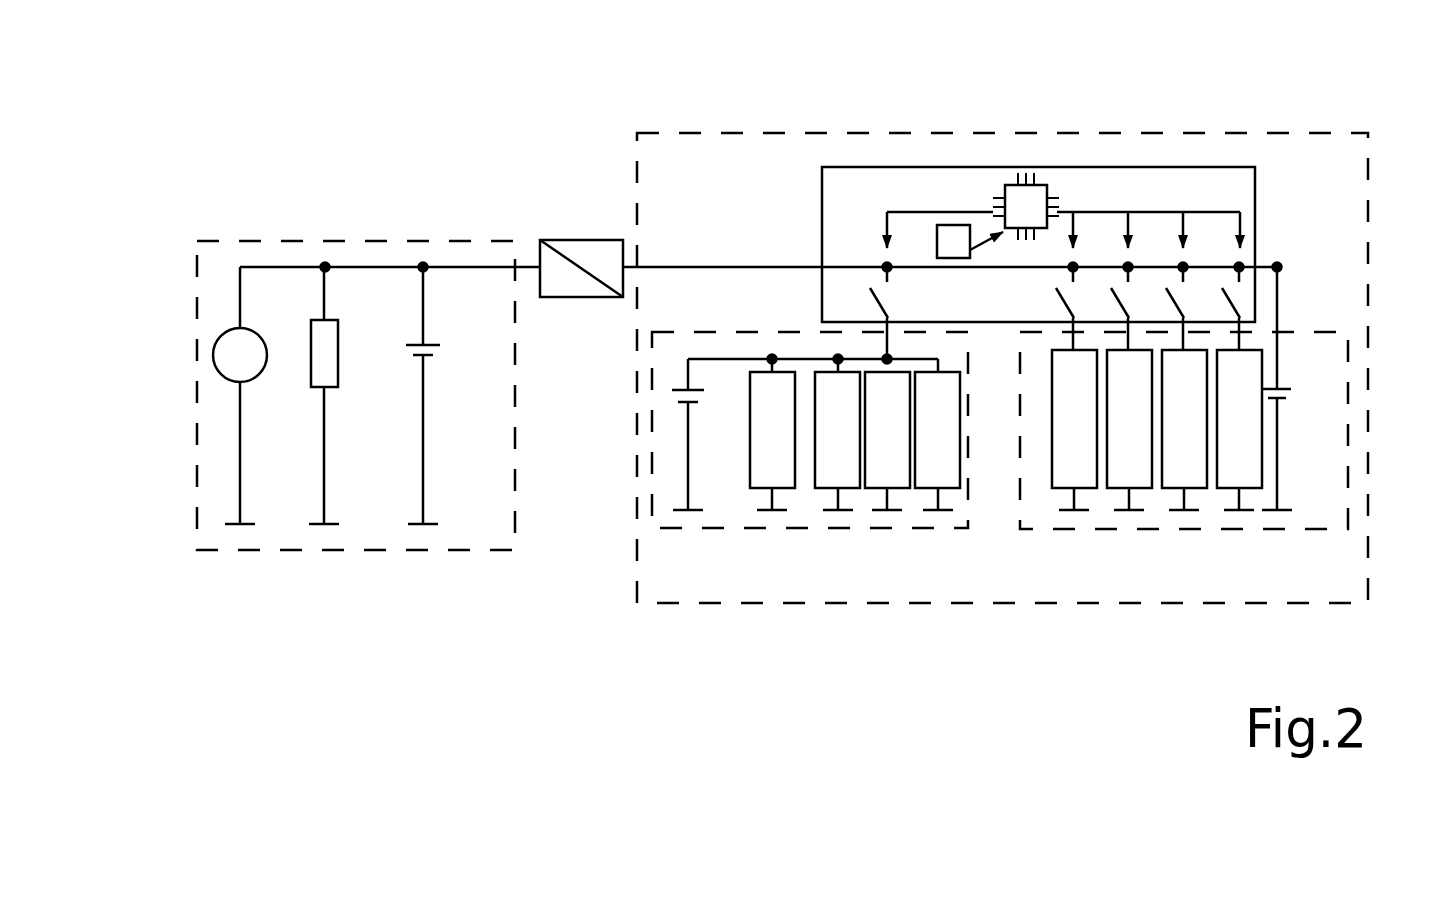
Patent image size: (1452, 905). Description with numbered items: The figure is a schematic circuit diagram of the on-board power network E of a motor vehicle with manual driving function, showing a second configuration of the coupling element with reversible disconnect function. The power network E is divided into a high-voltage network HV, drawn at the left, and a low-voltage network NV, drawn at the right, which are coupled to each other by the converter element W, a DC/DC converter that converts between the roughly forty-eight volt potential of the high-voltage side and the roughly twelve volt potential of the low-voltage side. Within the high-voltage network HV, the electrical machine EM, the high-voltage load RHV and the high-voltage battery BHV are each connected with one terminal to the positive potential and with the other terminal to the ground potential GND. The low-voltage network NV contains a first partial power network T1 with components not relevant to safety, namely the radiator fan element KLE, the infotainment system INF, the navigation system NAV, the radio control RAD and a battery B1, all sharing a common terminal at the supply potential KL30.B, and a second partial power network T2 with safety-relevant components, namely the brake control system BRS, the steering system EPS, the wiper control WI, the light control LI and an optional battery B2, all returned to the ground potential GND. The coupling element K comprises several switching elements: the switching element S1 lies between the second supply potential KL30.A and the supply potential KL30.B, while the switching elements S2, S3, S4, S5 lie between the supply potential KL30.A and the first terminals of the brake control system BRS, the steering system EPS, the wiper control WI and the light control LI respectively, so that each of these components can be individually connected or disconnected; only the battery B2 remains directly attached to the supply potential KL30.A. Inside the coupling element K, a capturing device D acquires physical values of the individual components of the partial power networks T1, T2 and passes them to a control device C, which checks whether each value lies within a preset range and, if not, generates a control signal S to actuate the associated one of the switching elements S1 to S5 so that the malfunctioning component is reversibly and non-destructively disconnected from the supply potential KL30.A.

The power network E is at (218, 173).
The high-voltage network HV is at (290, 242).
The electrical machine EM is at (240, 395).
The high-voltage load RHV is at (353, 395).
The high-voltage battery BHV is at (454, 395).
The ground potential GND is at (222, 525).
The converter element W is at (573, 240).
The low-voltage network NV is at (830, 133).
The second supply potential KL30.A is at (732, 267).
The supply potential KL30.B is at (887, 340).
The coupling element K is at (895, 167).
The control signal S is at (952, 212).
The control device C is at (1026, 206).
The capturing device D is at (970, 241).
The switching element S1 is at (862, 311).
The switching element S2 is at (1047, 307).
The switching element S3 is at (1105, 307).
The switching element S4 is at (1160, 307).
The switching element S5 is at (1216, 307).
The first partial power network T1 is at (793, 528).
The second partial power network T2 is at (1072, 529).
The battery B1 is at (703, 433).
The battery B2 is at (1297, 387).
The radiator fan element KLE is at (772, 434).
The infotainment system INF is at (837, 434).
The navigation system NAV is at (887, 441).
The radio control RAD is at (937, 434).
The brake control system BRS is at (1074, 430).
The steering system EPS is at (1129, 430).
The wiper control WI is at (1184, 430).
The light control LI is at (1239, 430).